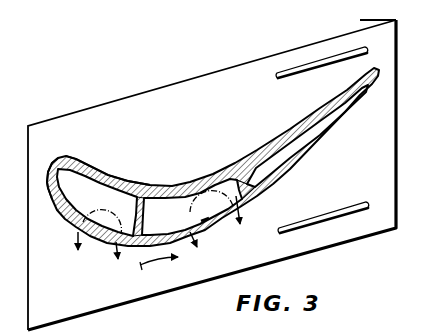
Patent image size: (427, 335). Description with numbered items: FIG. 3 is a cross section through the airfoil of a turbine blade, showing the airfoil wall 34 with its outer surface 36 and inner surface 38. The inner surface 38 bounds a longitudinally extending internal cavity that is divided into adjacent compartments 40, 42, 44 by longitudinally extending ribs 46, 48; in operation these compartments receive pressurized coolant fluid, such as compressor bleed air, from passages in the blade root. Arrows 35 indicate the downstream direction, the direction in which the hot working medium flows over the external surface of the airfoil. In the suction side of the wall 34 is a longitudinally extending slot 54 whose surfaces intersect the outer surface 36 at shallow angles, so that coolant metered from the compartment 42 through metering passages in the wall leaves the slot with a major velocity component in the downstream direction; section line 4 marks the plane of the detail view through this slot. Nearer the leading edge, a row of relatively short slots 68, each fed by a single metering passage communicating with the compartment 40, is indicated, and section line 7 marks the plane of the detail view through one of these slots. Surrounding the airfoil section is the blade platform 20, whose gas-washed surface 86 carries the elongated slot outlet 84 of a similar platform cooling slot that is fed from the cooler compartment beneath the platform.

The platform 20 is at (385, 150).
The wall 34 is at (182, 189).
The arrows 35 is at (159, 270).
The outer surface 36 is at (105, 173).
The inner surface 38 is at (70, 198).
The compartment 40 is at (98, 204).
The compartment 42 is at (172, 221).
The compartment 44 is at (287, 147).
The rib 46 is at (140, 217).
The rib 48 is at (247, 185).
The slot 54 is at (212, 220).
The slots 68 is at (108, 247).
The slot outlet 84 is at (289, 77).
The platform surface 86 is at (377, 30).
The section line 4- 4 is at (220, 234).
The section line 7- 7 is at (97, 259).